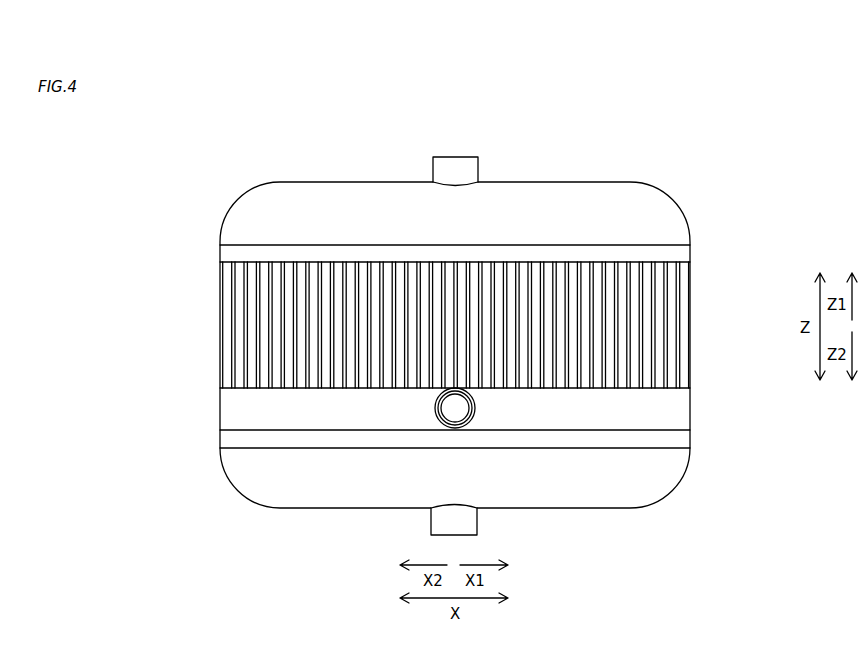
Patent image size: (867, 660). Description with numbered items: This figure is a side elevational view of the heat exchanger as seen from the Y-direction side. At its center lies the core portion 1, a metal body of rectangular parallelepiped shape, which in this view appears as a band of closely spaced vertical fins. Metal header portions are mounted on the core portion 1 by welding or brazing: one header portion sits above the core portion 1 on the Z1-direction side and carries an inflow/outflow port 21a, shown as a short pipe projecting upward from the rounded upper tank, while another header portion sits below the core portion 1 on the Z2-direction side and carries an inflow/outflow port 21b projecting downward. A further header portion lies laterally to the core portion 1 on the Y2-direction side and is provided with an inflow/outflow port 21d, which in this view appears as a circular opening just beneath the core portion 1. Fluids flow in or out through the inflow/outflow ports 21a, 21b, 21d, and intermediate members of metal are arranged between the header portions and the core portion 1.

The core portion 1 is at (675, 346).
The inflow/outflow port 21a is at (455, 166).
The inflow/outflow port 21b is at (470, 520).
The inflow/outflow port 21d is at (476, 410).